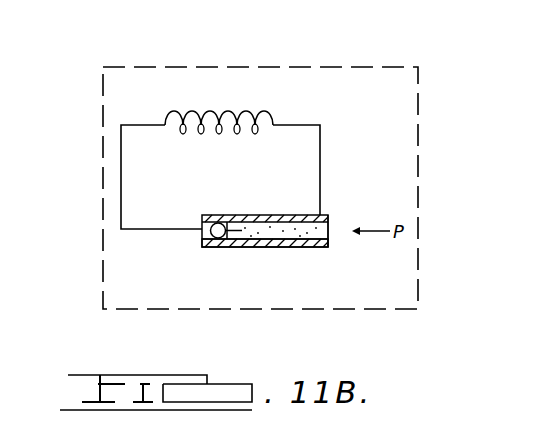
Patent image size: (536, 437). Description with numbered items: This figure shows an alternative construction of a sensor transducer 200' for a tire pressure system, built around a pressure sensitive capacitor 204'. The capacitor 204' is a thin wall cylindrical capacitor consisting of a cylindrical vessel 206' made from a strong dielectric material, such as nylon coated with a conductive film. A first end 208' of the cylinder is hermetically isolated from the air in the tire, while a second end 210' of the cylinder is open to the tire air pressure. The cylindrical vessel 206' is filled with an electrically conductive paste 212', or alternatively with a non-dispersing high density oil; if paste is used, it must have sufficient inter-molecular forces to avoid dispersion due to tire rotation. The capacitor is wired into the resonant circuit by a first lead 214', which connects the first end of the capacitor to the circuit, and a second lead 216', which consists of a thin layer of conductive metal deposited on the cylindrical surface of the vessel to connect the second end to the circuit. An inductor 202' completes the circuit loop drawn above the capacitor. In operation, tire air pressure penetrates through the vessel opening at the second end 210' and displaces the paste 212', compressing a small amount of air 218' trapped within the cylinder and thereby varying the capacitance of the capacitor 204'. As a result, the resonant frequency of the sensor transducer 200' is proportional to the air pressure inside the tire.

The sensor transducer 200' is at (260, 158).
The inductor 202' is at (210, 81).
The capacitor 204' is at (230, 259).
The cylindrical vessel 206' is at (265, 268).
The first end 208' is at (183, 203).
The second end 210' is at (362, 256).
The paste 212' is at (313, 200).
The first lead 214' is at (113, 183).
The second lead 216' is at (333, 157).
The air 218' is at (249, 193).